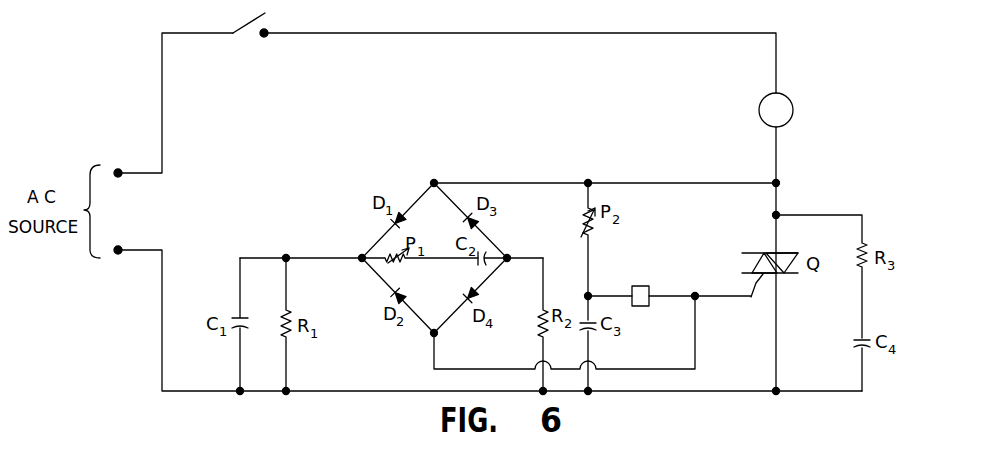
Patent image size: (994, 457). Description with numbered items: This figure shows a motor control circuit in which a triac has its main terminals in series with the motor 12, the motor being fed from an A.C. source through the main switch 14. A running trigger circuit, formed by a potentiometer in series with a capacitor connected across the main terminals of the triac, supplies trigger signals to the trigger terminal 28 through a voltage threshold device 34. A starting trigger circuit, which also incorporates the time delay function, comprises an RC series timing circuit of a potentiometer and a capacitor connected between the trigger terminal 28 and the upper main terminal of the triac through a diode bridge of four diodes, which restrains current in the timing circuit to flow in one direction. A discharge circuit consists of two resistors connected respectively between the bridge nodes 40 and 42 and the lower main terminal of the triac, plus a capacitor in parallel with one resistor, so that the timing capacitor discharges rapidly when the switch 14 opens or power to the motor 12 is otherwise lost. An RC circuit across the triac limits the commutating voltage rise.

The motor 12 is at (788, 86).
The main switch 14 is at (258, 17).
The trigger terminal 28 is at (762, 296).
The voltage threshold device 34 is at (643, 286).
The node of the diode bridge 40 is at (362, 258).
The node of the diode bridge 42 is at (507, 258).